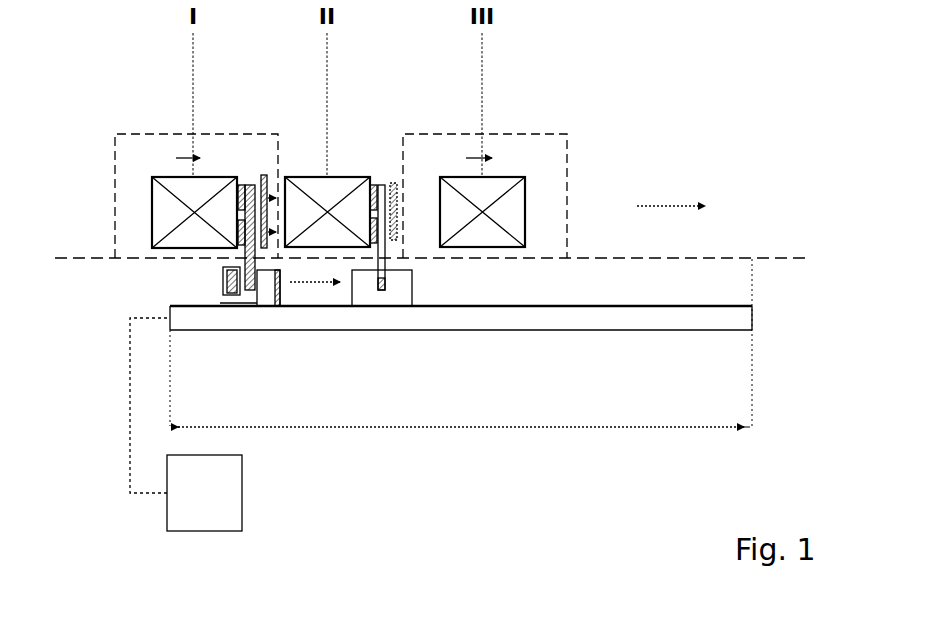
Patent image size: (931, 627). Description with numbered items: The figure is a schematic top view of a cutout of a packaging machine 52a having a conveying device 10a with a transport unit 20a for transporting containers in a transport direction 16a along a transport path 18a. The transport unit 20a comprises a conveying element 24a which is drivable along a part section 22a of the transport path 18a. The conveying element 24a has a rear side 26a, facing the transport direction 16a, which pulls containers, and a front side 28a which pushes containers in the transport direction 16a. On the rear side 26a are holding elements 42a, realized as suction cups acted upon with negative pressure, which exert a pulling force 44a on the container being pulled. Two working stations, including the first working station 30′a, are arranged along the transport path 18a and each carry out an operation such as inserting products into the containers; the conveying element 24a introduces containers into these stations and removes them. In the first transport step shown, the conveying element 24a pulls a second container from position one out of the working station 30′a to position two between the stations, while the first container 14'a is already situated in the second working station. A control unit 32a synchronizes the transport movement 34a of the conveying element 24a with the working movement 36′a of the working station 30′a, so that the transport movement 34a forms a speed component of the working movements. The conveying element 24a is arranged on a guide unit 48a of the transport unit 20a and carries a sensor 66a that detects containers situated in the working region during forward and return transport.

The conveying device 10a is at (672, 357).
The first container 14'a is at (543, 212).
The transport direction 16a is at (678, 205).
The transport path 18a is at (742, 257).
The transport unit 20a is at (602, 338).
The part section 22a is at (460, 429).
The conveying element 24a is at (252, 183).
The rear side 26a is at (222, 266).
The front side 28a is at (288, 192).
The first working station 30′a is at (128, 134).
The control unit 32a is at (242, 490).
The transport movement 34a is at (318, 284).
The working movement of first working station 36′a is at (190, 133).
The holding elements 42a is at (240, 243).
The pulling force 44a is at (282, 273).
The guide unit 48a is at (550, 305).
The packaging machine 52a is at (705, 52).
The sensor 66a is at (222, 293).